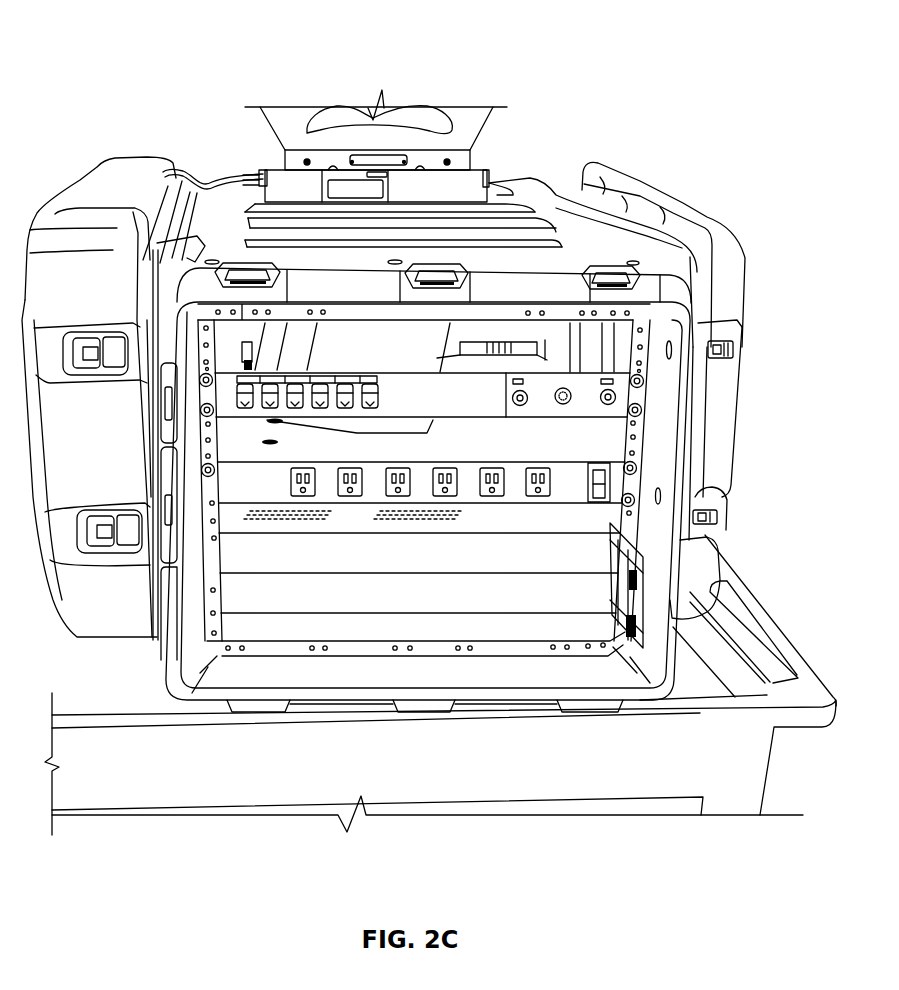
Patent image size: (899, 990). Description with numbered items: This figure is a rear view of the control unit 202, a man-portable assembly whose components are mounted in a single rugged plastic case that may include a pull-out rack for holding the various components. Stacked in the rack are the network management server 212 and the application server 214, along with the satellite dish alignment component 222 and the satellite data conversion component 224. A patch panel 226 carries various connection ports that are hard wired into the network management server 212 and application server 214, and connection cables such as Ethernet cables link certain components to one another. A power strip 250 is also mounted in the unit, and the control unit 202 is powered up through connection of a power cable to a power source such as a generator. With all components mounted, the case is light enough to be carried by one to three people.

The control unit 202 is at (98, 42).
The patch panel 226 is at (636, 398).
The satellite data conversion component 224 is at (604, 443).
The power strip 250 is at (578, 482).
The satellite dish alignment component 222 is at (594, 515).
The application server 214 is at (578, 557).
The network management server 212 is at (578, 594).